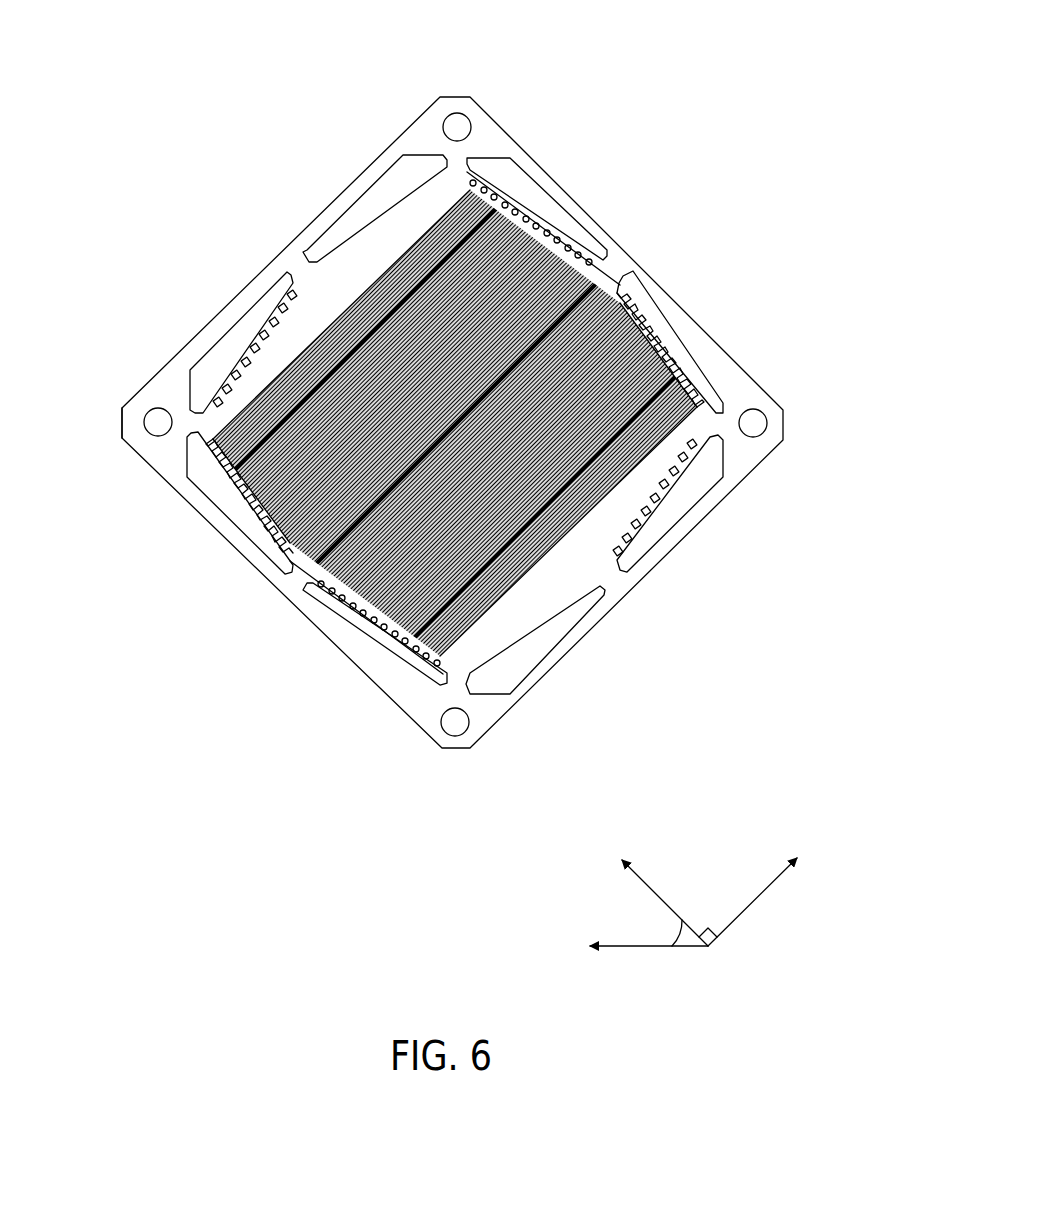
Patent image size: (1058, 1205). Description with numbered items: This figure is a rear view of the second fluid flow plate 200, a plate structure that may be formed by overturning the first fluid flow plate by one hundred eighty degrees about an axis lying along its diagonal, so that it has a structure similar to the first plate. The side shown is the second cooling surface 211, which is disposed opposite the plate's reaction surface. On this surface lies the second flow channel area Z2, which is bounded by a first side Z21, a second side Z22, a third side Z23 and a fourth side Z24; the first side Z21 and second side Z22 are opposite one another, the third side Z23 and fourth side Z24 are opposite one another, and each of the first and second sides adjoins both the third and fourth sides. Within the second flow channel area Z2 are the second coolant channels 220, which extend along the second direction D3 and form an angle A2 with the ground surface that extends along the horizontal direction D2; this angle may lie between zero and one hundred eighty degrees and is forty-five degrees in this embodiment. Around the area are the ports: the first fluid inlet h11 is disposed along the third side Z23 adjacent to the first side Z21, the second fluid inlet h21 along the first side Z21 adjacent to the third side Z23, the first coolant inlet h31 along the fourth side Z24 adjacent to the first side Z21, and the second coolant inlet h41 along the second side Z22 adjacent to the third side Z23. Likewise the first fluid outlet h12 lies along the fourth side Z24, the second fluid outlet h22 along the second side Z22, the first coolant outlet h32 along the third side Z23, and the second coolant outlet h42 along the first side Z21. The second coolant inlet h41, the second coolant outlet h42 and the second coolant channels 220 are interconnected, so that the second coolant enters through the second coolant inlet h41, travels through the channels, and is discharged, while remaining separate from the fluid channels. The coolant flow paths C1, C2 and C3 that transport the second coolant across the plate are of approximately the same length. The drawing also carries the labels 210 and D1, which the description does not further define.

The second fluid flow plate 200 is at (806, 28).
The frame plate 210 is at (418, 122).
The second cooling surface 211 is at (165, 450).
The second coolant channels 220 is at (300, 372).
The first fluid inlet h11 is at (380, 197).
The first fluid outlet h12 is at (530, 650).
The second fluid inlet h21 is at (530, 197).
The second fluid outlet h22 is at (380, 648).
The first coolant inlet h31 is at (673, 513).
The first coolant outlet h32 is at (205, 375).
The second coolant inlet h41 is at (218, 488).
The second coolant outlet h42 is at (687, 357).
The coolant flow path C1 is at (563, 258).
The coolant flow path C2 is at (668, 360).
The coolant flow path C3 is at (352, 600).
The second flow channel area Z2 is at (270, 560).
The first side Z21 is at (617, 290).
The second side Z22 is at (320, 563).
The third side Z23 is at (372, 280).
The fourth side Z24 is at (570, 540).
The first direction D1 is at (652, 889).
The horizontal direction D2 is at (628, 949).
The second direction D3 is at (770, 889).
The angle A2 is at (670, 929).